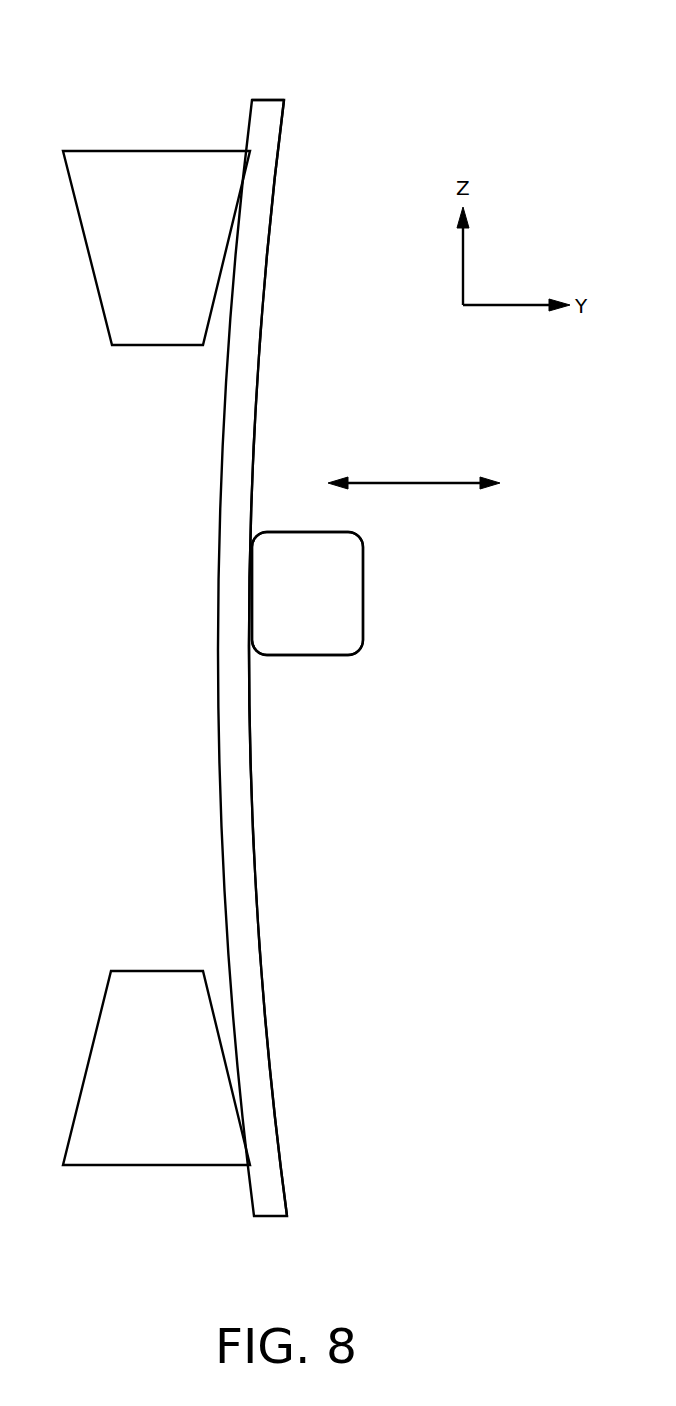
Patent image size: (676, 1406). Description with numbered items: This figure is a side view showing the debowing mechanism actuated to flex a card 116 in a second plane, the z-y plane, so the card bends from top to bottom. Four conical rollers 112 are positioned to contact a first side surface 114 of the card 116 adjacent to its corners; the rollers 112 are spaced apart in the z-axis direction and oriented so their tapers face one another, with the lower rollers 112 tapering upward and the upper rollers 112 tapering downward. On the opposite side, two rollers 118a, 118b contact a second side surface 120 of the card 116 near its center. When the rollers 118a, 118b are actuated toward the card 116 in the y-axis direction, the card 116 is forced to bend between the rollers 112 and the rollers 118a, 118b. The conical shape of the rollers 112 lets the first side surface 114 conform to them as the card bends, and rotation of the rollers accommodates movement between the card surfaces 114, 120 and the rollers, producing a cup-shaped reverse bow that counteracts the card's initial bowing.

The conical rollers 112 is at (85, 248).
The first side surface 114 is at (226, 447).
The card 116 is at (266, 82).
The roller 118a is at (364, 592).
The roller 118b is at (307, 593).
The second side surface 120 is at (266, 302).